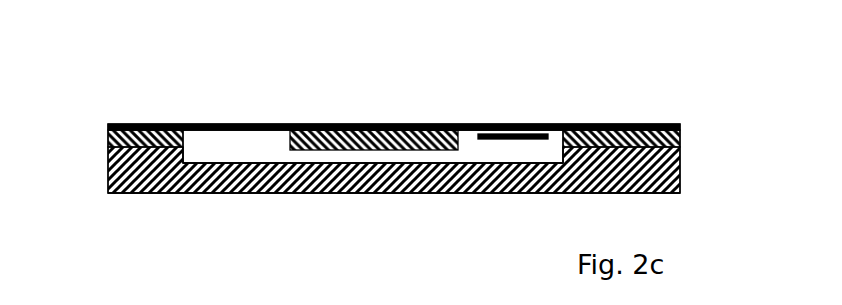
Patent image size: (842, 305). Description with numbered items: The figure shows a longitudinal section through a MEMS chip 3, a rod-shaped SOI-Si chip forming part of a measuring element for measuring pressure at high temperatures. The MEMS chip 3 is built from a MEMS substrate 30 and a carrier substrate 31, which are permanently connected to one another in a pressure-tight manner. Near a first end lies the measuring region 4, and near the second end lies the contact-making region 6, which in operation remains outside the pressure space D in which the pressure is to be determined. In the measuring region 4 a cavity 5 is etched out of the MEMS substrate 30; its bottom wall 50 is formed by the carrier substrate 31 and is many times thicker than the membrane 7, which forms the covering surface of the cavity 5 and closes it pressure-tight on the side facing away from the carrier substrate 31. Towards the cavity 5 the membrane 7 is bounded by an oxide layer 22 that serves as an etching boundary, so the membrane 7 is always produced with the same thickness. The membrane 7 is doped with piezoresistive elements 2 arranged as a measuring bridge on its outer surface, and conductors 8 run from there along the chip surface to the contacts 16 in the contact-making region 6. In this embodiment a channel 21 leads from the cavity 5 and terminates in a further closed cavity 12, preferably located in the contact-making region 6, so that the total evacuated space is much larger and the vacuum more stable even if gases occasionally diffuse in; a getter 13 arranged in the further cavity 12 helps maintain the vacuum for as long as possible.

The MEMS chip 3 is at (638, 60).
The piezoresistive elements 2 is at (198, 123).
The membrane 7 is at (218, 123).
The measuring region 4 is at (118, 108).
The oxide layer 22 is at (401, 125).
The conductors 8 is at (456, 125).
The contact-making region 6 is at (577, 110).
The contacts 16 is at (637, 125).
The bottom wall 50 is at (102, 163).
The cavity 5 is at (224, 140).
The carrier substrate 31 is at (250, 182).
The MEMS substrate 30 is at (362, 153).
The channel 21 is at (418, 160).
The further closed cavity 12 is at (507, 147).
The getter 13 is at (552, 143).
The pressure space D is at (92, 107).